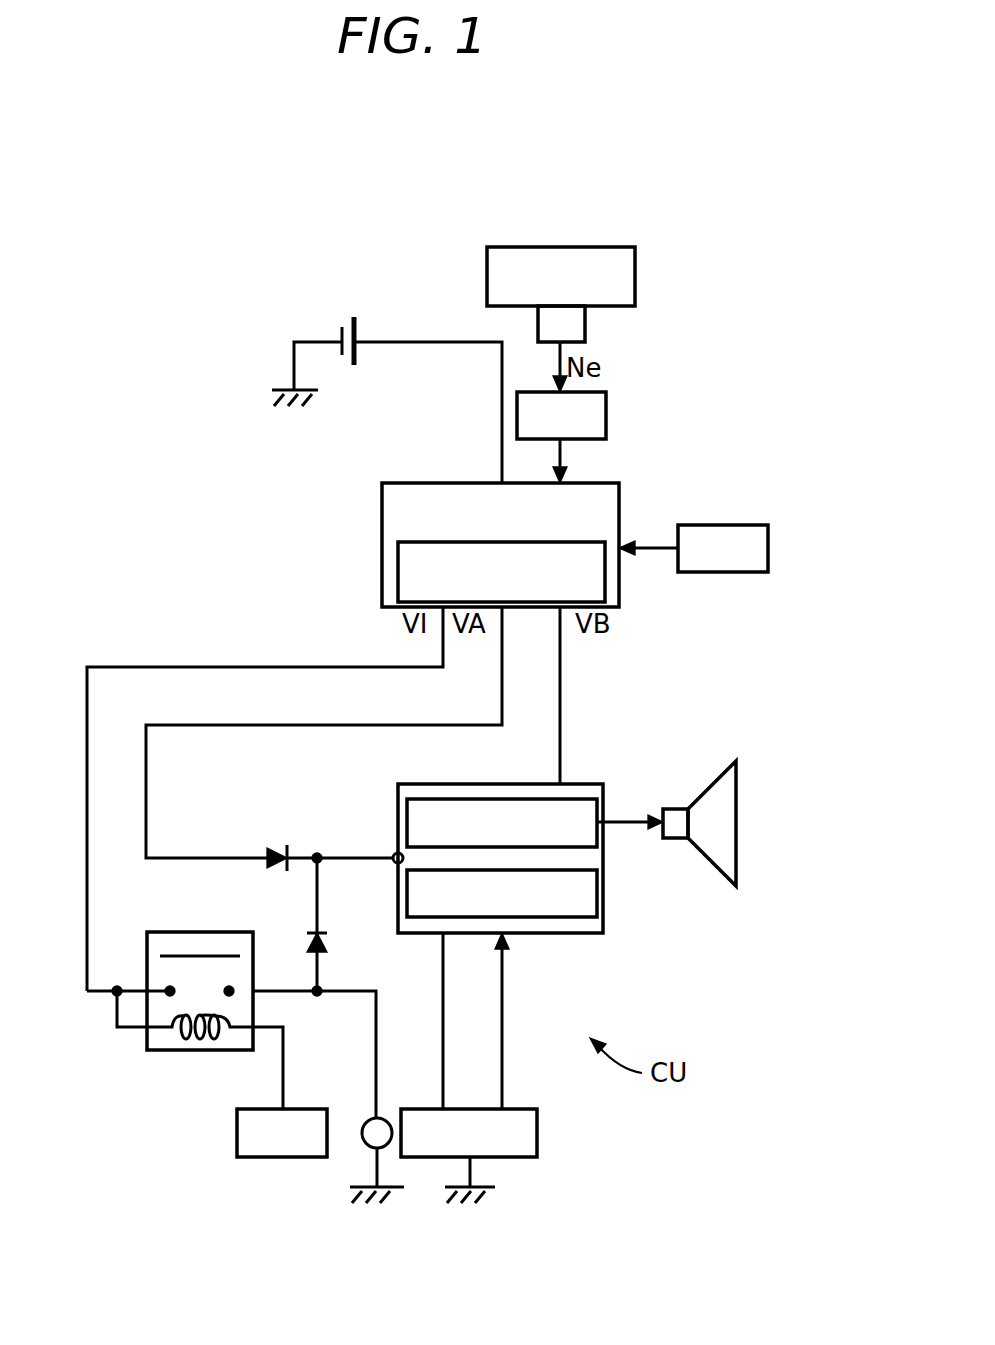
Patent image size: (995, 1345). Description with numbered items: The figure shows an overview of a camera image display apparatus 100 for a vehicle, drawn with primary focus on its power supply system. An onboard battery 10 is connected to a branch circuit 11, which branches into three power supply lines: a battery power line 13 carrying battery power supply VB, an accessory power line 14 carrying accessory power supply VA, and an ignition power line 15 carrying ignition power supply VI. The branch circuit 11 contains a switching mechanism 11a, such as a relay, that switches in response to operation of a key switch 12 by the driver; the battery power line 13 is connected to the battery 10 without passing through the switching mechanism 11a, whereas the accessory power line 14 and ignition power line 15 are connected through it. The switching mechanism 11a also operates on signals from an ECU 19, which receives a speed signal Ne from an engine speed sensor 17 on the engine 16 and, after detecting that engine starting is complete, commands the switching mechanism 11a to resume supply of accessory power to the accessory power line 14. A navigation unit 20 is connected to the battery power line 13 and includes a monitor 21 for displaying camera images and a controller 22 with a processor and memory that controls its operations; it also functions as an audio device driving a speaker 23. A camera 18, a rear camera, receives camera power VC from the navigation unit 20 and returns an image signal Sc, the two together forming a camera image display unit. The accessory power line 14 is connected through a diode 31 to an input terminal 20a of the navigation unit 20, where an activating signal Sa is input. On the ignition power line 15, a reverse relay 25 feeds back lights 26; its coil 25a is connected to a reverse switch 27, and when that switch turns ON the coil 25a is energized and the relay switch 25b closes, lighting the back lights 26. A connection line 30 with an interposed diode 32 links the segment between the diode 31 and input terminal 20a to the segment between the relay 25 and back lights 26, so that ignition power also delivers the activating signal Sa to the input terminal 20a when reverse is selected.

The camera image display apparatus 100 is at (222, 552).
The battery 10 is at (356, 330).
The branch circuit 11 is at (475, 513).
The switching mechanism 11a is at (423, 542).
The key switch 12 is at (745, 572).
The +B line 13 is at (565, 760).
The ACC line 14 is at (185, 725).
The IG line 15 is at (87, 772).
The engine 16 is at (635, 275).
The engine speed sensor 17 is at (585, 330).
The camera 18 is at (537, 1135).
The ECU 19 is at (606, 420).
The navigation unit 20 is at (538, 872).
The input terminal 20a is at (394, 853).
The monitor 21 is at (597, 900).
The controller 22 is at (597, 810).
The speaker 23 is at (737, 808).
The reverse relay 25 is at (151, 1003).
The coil 25a is at (200, 1040).
The relay switch 25b is at (188, 955).
The back lights 26 is at (368, 1150).
The reverse switch 27 is at (237, 1140).
The connection line 30 is at (317, 965).
The diode 31 is at (277, 845).
The diode 32 is at (312, 940).